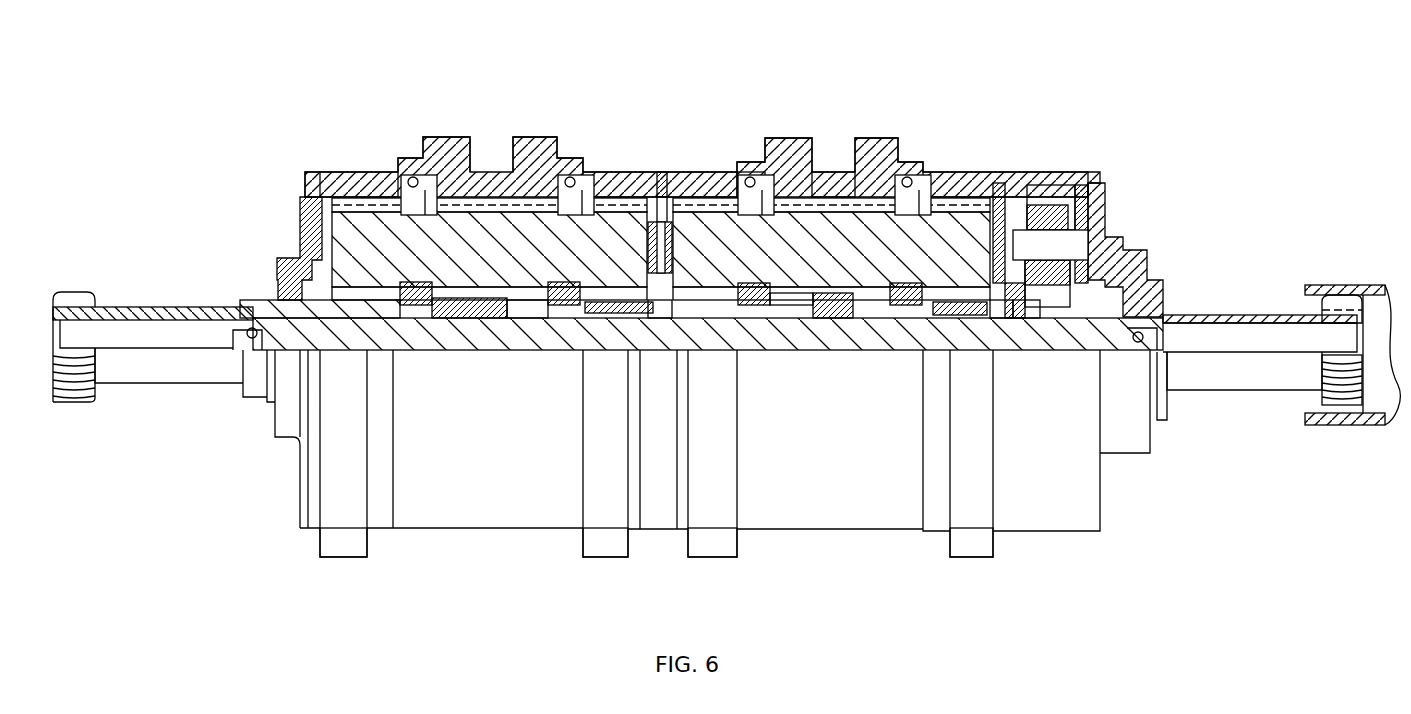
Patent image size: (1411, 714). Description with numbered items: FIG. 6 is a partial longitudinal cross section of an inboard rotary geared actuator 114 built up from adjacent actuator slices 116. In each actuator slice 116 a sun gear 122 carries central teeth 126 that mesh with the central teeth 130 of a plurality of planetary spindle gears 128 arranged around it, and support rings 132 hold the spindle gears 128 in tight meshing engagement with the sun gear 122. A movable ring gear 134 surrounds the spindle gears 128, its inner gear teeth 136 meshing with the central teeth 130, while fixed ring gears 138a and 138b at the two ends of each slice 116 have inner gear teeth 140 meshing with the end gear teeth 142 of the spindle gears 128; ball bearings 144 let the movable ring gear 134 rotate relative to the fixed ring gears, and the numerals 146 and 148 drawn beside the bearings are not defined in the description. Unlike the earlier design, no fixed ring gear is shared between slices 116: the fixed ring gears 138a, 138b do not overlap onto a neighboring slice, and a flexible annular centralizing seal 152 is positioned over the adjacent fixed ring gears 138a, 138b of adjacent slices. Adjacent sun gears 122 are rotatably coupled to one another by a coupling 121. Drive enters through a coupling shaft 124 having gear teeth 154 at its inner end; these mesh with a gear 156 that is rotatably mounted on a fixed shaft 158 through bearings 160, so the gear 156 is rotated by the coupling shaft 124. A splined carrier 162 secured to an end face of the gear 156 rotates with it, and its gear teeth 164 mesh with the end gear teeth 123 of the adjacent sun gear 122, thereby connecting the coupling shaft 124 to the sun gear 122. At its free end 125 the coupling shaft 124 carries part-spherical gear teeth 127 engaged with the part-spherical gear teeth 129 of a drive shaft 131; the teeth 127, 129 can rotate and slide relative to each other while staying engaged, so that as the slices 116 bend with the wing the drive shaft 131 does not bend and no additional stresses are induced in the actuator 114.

The rotary geared actuator 114 is at (370, 108).
The actuator slice 116 is at (480, 124).
The coupling 121 is at (640, 320).
The sun gear 122 is at (500, 318).
The end gear teeth 123 is at (568, 318).
The coupling shaft 124 is at (1205, 315).
The free end 125 is at (1312, 372).
The central teeth 126 is at (834, 305).
The gear teeth 127 is at (1340, 300).
The spindle gear 128 is at (944, 228).
The part-spherical gear teeth 129 is at (1315, 302).
The central teeth 130 is at (797, 198).
The drive shaft 131 is at (1365, 425).
The support rings 132 is at (757, 305).
The movable ring gear 134 is at (840, 162).
The inner gear teeth 136 is at (748, 198).
The fixed ring gear 138a is at (357, 172).
The fixed ring gear 138b is at (602, 172).
The inner gear teeth 140 is at (672, 197).
The end gear teeth 142 is at (690, 318).
The ball bearings 144 is at (740, 176).
The bearing ball 146 is at (746, 180).
The bearing inner race 148 is at (742, 196).
The flexible annular centralizing seal 152 is at (656, 174).
The gear teeth 154 is at (1082, 305).
The gear 156 is at (1068, 200).
The fixed shaft 158 is at (1067, 248).
The bearings 160 is at (1065, 222).
The splined carrier 162 is at (1005, 190).
The gear teeth 164 is at (1028, 318).